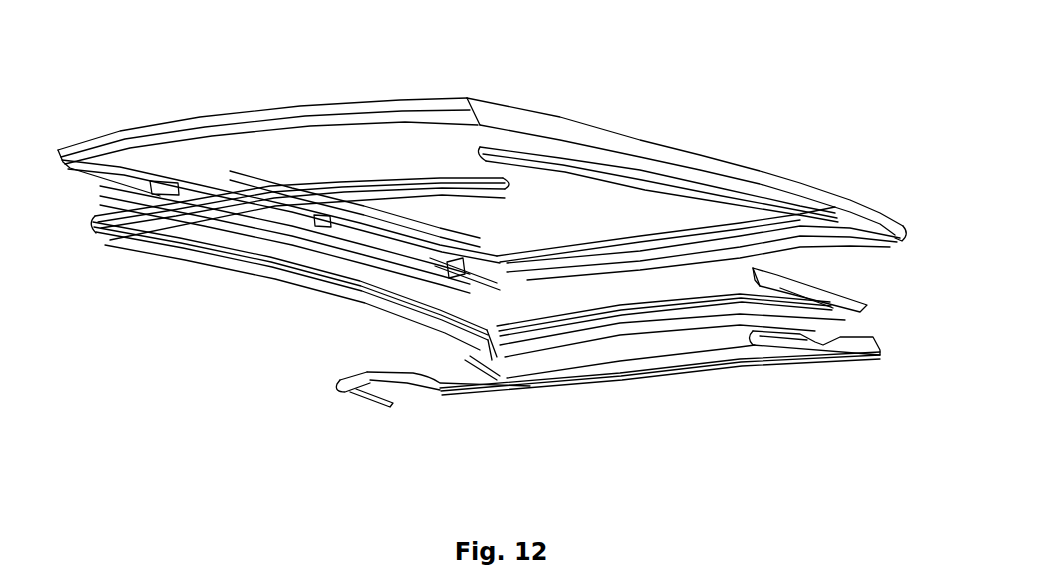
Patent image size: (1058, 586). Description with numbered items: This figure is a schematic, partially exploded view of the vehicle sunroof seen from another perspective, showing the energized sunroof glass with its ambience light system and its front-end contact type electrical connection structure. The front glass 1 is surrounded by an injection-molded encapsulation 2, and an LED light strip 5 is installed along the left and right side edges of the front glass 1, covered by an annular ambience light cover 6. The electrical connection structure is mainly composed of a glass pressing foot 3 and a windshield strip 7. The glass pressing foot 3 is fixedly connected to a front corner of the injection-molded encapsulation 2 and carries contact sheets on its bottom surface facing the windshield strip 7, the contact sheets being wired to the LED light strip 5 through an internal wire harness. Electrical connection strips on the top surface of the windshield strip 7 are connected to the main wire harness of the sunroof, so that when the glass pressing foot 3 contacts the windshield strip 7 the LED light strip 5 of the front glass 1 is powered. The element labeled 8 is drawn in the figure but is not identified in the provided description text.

The front glass 1 is at (333, 140).
The injection-molded encapsulation 2 is at (655, 145).
The glass pressing foot 3 is at (488, 393).
The LED light strip 5 is at (820, 241).
The annular ambience light cover 6 is at (850, 307).
The windshield strip 7 is at (443, 390).
The clip 8 is at (363, 402).